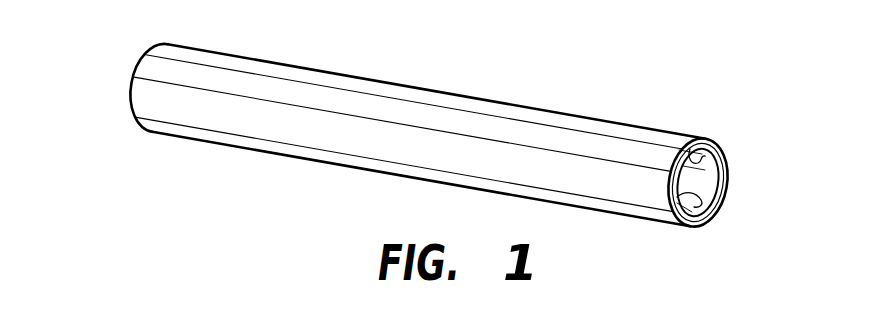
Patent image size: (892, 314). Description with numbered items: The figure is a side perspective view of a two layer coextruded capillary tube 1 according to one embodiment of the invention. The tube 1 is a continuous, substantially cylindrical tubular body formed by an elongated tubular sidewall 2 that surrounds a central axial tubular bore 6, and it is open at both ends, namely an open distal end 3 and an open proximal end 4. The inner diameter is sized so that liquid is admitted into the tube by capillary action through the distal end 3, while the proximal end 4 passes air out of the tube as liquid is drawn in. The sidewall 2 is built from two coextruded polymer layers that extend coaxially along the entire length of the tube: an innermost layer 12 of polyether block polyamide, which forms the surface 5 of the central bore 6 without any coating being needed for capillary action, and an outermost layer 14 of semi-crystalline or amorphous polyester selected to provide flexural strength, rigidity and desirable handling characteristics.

The two layer capillary tube 1 is at (493, 79).
The elongated tubular sidewall 2 is at (306, 162).
The open distal end 3 is at (735, 149).
The open proximal end 4 is at (128, 94).
The surface of the central bore 5 is at (708, 139).
The central axial tubular bore 6 is at (699, 180).
The innermost layer 12 is at (678, 221).
The outermost layer 14 is at (333, 71).